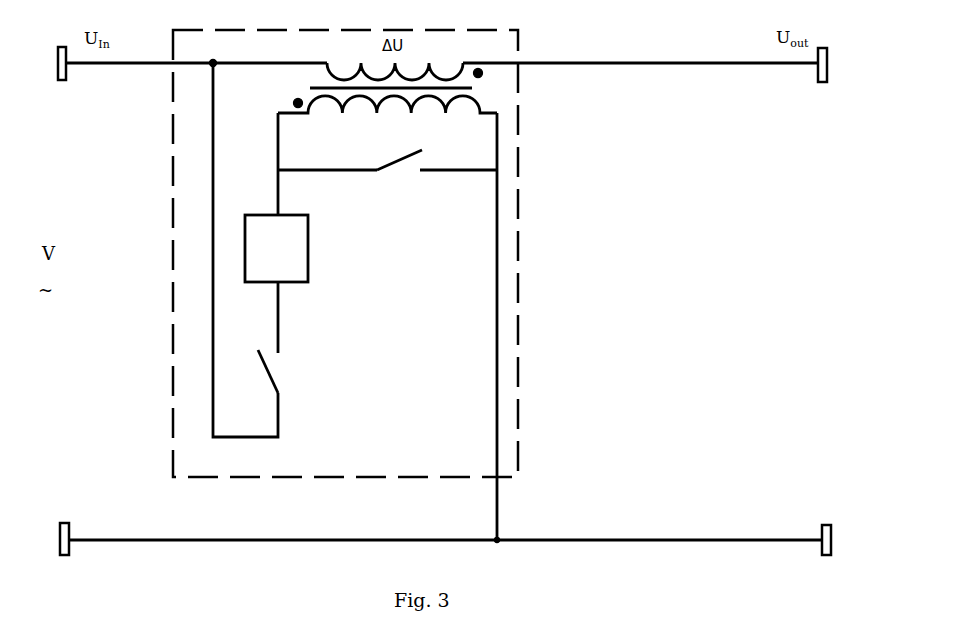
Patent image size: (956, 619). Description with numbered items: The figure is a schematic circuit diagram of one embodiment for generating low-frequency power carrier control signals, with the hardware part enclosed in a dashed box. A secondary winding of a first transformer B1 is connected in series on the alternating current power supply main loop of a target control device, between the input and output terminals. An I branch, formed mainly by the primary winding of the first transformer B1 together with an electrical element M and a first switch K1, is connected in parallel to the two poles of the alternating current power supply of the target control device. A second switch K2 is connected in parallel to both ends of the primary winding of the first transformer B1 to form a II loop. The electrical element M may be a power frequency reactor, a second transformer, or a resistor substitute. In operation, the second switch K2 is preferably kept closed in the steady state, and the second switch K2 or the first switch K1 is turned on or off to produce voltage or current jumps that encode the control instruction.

The first transformer B1 is at (387, 88).
The second switch K2 is at (387, 176).
The first switch K1 is at (289, 371).
The electrical element M is at (276, 248).